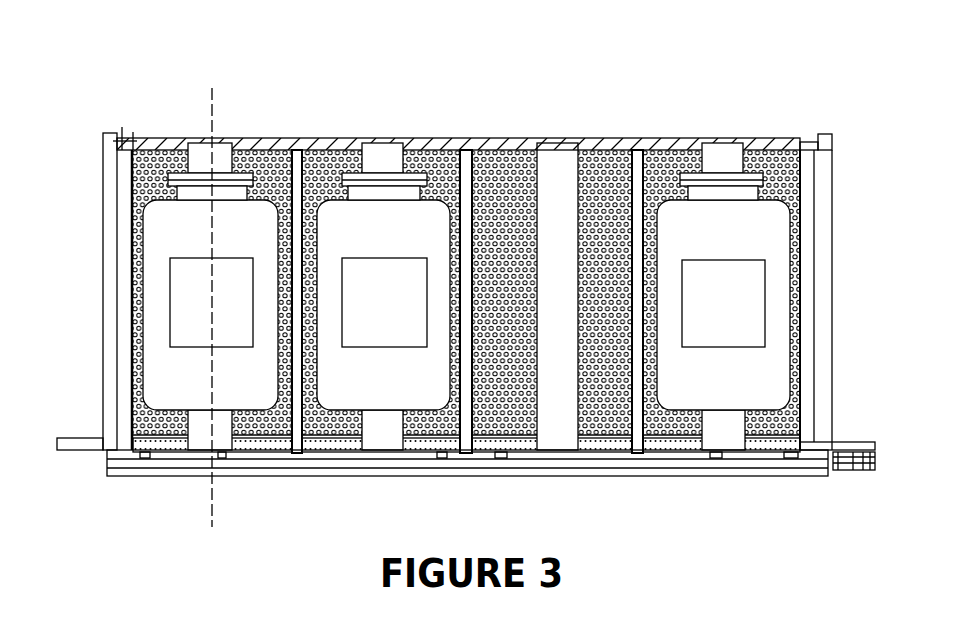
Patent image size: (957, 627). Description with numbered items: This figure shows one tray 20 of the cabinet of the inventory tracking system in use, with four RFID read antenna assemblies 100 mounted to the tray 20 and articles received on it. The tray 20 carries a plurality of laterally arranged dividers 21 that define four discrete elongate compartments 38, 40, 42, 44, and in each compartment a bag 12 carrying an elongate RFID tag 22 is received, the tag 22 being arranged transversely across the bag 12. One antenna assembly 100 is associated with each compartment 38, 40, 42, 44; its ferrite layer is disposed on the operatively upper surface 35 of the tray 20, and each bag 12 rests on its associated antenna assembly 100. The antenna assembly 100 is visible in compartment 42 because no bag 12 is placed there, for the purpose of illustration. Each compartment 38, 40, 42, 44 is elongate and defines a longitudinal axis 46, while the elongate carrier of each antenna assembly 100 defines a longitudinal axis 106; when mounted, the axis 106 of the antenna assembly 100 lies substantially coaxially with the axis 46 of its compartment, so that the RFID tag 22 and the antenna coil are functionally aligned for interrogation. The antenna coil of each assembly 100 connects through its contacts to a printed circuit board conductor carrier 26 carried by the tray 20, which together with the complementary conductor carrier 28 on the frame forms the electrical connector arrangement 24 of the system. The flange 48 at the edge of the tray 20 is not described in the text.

The bag 12 is at (773, 275).
The tray 20 is at (833, 210).
The dividers 21 is at (305, 195).
The RFID tag 22 is at (718, 303).
The electrical connector arrangement 24 is at (842, 485).
The conductor carrier 26 is at (266, 464).
The conductor carrier 28 is at (852, 455).
The upper surface 35 is at (832, 147).
The compartment 38 is at (152, 188).
The compartment 40 is at (318, 150).
The compartment 42 is at (618, 150).
The compartment 44 is at (657, 185).
The longitudinal axis 46 is at (210, 100).
The flange 48 is at (760, 148).
The RFID read antenna assembly 100 is at (727, 430).
The longitudinal axis 106 is at (210, 302).